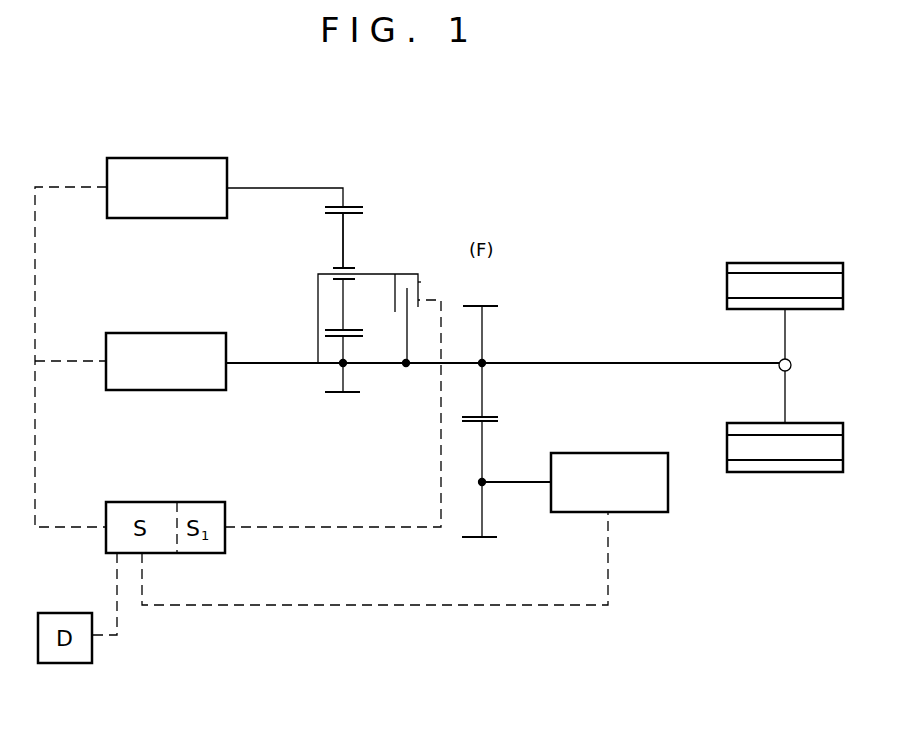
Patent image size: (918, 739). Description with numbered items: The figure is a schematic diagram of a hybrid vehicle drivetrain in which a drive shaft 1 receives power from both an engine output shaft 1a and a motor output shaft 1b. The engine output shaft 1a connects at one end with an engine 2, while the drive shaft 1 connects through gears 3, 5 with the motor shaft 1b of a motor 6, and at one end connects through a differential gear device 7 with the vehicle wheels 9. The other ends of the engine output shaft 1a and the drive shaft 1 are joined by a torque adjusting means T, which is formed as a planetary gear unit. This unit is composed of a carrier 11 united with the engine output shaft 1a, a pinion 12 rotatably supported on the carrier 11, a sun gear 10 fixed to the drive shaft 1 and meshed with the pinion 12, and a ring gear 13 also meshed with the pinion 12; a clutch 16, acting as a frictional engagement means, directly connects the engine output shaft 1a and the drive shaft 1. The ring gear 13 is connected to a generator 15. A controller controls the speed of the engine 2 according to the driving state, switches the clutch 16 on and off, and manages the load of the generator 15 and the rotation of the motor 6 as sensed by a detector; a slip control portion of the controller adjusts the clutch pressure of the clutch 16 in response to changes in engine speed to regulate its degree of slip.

The drive shaft 1 is at (422, 374).
The engine output shaft 1a is at (266, 356).
The motor output shaft 1b is at (521, 480).
The engine 2 is at (175, 391).
The gear 3 is at (490, 307).
The gear 5 is at (486, 540).
The motor 6 is at (637, 512).
The differential gear device 7 is at (792, 363).
The vehicle wheels 9 is at (797, 262).
The sun gear 10 is at (352, 396).
The carrier 11 is at (335, 270).
The pinion 12 is at (345, 228).
The ring gear 13 is at (351, 206).
The generator 15 is at (165, 157).
The clutch 16 is at (421, 282).
The torque adjusting means T is at (375, 247).